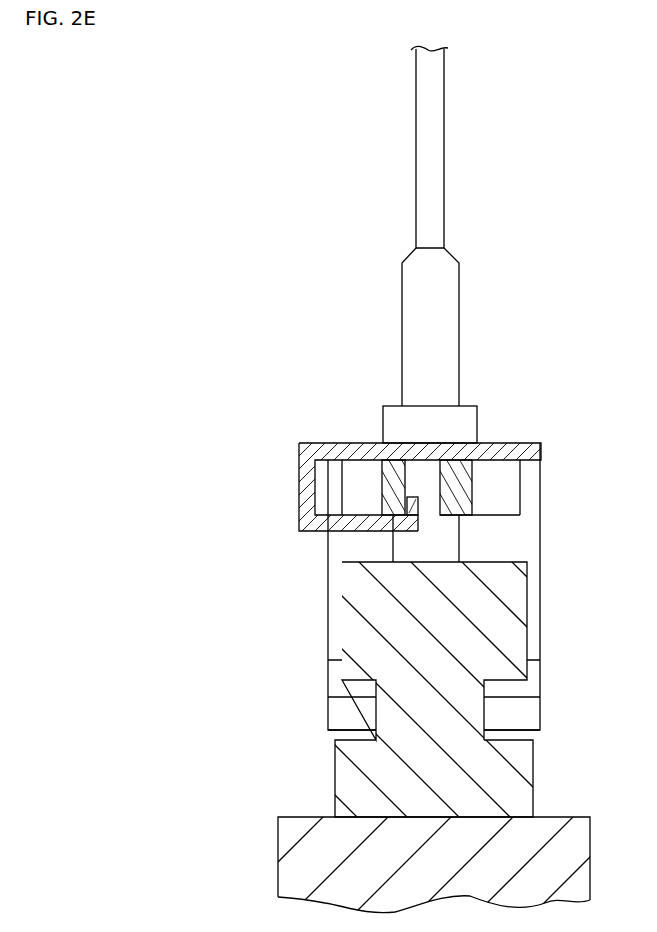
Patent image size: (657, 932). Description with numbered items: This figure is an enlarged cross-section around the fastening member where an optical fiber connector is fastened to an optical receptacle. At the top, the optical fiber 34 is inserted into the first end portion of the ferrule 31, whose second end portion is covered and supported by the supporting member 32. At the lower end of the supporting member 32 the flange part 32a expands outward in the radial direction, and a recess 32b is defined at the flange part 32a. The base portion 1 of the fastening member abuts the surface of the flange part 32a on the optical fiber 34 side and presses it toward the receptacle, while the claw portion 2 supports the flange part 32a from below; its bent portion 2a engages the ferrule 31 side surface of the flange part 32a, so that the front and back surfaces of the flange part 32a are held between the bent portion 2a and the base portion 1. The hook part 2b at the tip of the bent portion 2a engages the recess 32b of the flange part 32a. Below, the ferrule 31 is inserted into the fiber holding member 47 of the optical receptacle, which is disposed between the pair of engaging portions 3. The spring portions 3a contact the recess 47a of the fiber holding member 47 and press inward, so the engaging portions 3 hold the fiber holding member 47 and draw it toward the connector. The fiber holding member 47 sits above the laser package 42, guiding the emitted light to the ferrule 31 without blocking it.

The base portion 1 is at (507, 443).
The claw portion 2 is at (299, 481).
The bent portion 2a is at (352, 531).
The hook part 2b is at (418, 530).
The engaging portion 3 is at (341, 598).
The spring portion 3a is at (336, 678).
The ferrule 31 is at (435, 548).
The supporting member 32 is at (440, 297).
The flange part 32a is at (497, 482).
The recess 32b is at (423, 444).
The optical fiber 34 is at (430, 143).
The laser package 42 is at (303, 852).
The fiber holding member 47 is at (345, 780).
The recess 47a is at (360, 690).